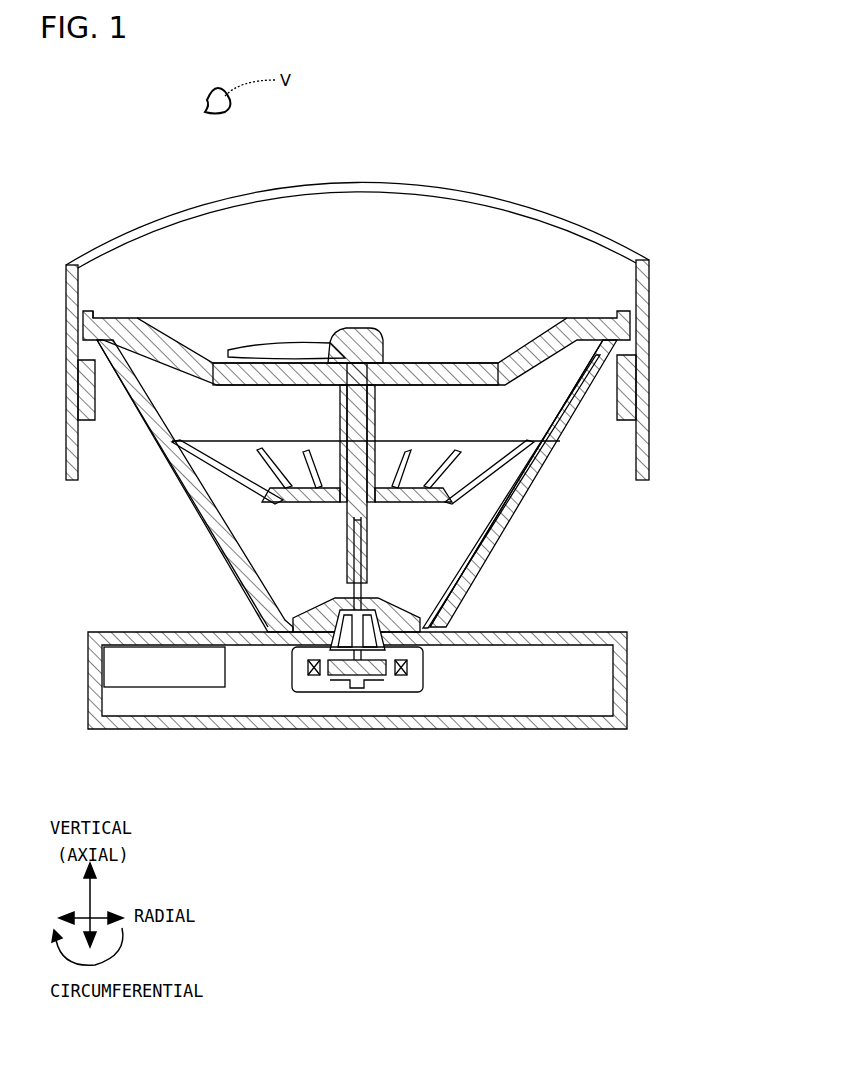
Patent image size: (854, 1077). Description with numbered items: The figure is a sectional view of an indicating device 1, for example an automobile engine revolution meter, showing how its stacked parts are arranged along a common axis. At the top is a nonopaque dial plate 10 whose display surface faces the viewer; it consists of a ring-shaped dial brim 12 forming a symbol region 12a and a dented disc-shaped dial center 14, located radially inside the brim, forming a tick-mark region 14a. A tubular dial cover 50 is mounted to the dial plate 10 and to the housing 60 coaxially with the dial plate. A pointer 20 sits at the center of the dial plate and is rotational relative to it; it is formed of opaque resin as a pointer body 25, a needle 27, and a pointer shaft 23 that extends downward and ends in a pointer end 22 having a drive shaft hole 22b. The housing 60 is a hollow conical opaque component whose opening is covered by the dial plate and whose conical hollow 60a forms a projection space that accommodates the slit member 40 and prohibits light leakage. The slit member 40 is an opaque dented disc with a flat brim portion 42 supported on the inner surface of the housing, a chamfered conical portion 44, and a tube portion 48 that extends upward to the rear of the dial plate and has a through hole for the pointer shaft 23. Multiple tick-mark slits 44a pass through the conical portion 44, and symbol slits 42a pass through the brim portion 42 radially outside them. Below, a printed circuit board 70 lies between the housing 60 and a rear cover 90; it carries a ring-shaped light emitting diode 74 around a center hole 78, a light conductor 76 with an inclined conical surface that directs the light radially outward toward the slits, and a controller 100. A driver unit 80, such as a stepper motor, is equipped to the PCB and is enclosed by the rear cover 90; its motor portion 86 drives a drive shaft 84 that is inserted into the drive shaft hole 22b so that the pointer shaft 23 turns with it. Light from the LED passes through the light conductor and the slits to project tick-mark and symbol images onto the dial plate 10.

The indicating device 1 is at (367, 346).
The dial plate 10 is at (356, 338).
The dial brim 12 is at (598, 305).
The symbol region 12a is at (112, 308).
The dial center 14 is at (470, 350).
The tick-mark region 14a is at (175, 333).
The pointer 20 is at (356, 316).
The pointer end 22 is at (352, 560).
The drive shaft hole 22b is at (352, 578).
The pointer shaft 23 is at (377, 385).
The pointer body 25 is at (386, 347).
The needle 27 is at (288, 343).
The slit member 40 is at (505, 500).
The brim portion 42 is at (357, 486).
The symbol slit 42a is at (183, 468).
The conical portion 44 is at (366, 448).
The tick-mark slit 44a is at (253, 450).
The tube portion 48 is at (340, 420).
The dial cover 50 is at (650, 270).
The housing 60 is at (650, 484).
The conical hollow 60a is at (468, 536).
The printed circuit board 70 is at (616, 652).
The light emitting diode 74 is at (430, 626).
The light conductor 76 is at (432, 612).
The center hole 78 is at (390, 652).
The driver unit 80 is at (366, 699).
The drive shaft 84 is at (314, 677).
The motor portion 86 is at (380, 690).
The rear cover 90 is at (385, 700).
The controller 100 is at (105, 700).